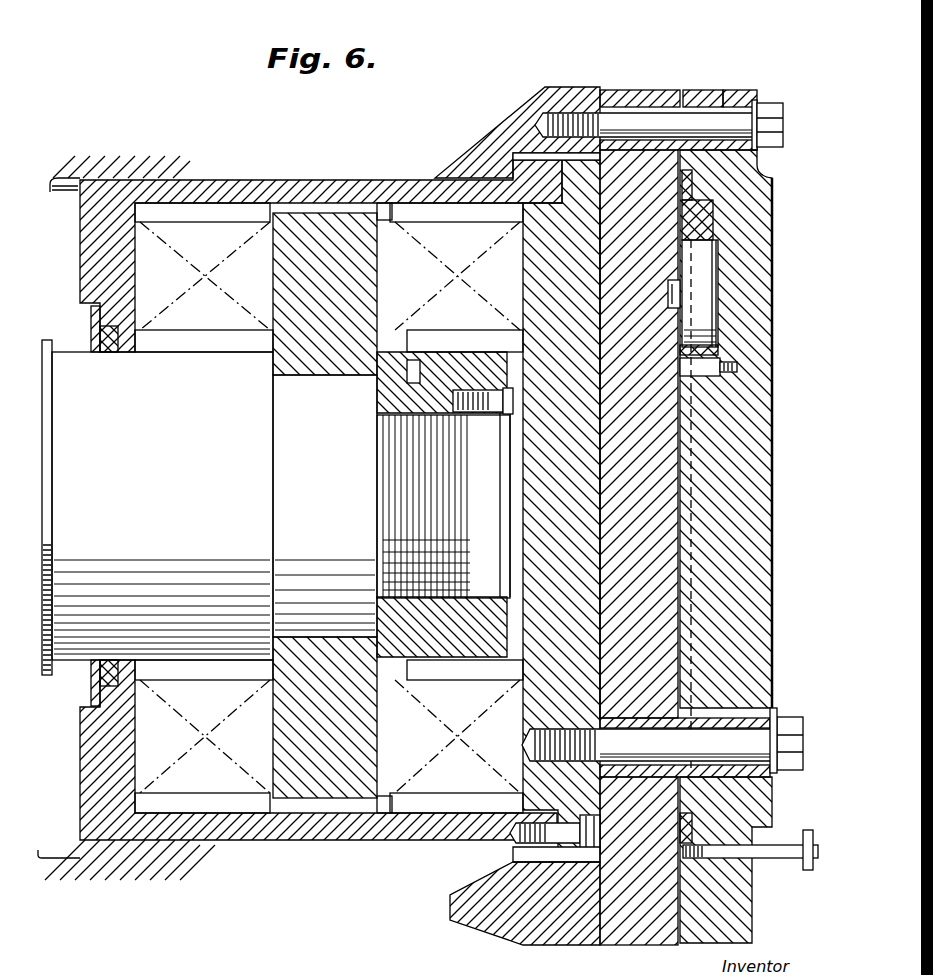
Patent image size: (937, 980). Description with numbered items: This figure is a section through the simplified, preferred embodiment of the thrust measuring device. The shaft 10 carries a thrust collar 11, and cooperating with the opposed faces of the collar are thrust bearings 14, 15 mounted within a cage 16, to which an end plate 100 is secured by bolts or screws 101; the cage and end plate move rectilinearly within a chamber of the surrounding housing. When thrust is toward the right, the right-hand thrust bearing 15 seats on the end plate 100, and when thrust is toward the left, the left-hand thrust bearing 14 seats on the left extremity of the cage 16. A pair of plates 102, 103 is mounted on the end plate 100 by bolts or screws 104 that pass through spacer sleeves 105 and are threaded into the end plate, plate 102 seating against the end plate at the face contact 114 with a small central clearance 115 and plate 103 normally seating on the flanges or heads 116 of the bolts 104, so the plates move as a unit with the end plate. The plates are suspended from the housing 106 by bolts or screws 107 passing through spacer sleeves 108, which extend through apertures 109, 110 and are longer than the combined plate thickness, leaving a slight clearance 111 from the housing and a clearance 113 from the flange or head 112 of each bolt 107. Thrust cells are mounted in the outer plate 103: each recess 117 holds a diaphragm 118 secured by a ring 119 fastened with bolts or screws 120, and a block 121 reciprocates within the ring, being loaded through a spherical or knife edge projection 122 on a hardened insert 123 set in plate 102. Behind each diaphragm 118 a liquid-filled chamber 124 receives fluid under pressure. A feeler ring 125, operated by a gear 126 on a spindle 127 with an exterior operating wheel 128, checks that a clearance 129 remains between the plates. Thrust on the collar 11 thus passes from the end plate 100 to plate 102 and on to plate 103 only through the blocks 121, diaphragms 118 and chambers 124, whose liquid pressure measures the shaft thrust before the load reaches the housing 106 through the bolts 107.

The shaft 10 is at (160, 622).
The thrust collar 11 is at (366, 270).
The left-hand thrust bearing 14 is at (233, 200).
The right-hand thrust bearing 15 is at (455, 262).
The cage 16 is at (358, 190).
The end plate 100 is at (535, 275).
The bolts or screws 101 is at (542, 815).
The inner plate 102 is at (677, 678).
The outer plate 103 is at (770, 640).
The bolts or screws 104 is at (734, 755).
The spacer sleeves 105 is at (733, 718).
The housing 106 is at (566, 95).
The bolts or screws 107 is at (699, 129).
The spacer sleeves 108 is at (710, 82).
The aperture 109 is at (664, 80).
The aperture 110 is at (733, 92).
The clearance 111 is at (625, 82).
The flange or head 112 is at (770, 150).
The clearance 113 is at (757, 98).
The face contact 114 is at (600, 705).
The clearance 115 is at (605, 500).
The flanges or heads 116 is at (778, 775).
The recesses 117 is at (718, 238).
The diaphragm 118 is at (720, 280).
The ring 119 is at (712, 215).
The bolts or screws 120 is at (722, 374).
The block 121 is at (680, 350).
The spherical or knife edge projection 122 is at (670, 290).
The hardened insert 123 is at (670, 305).
The chamber 124 is at (718, 320).
The feeler ring 125 is at (693, 185).
The gear 126 is at (726, 860).
The spindle 127 is at (775, 858).
The operating wheel 128 is at (806, 870).
The clearance 129 is at (683, 625).